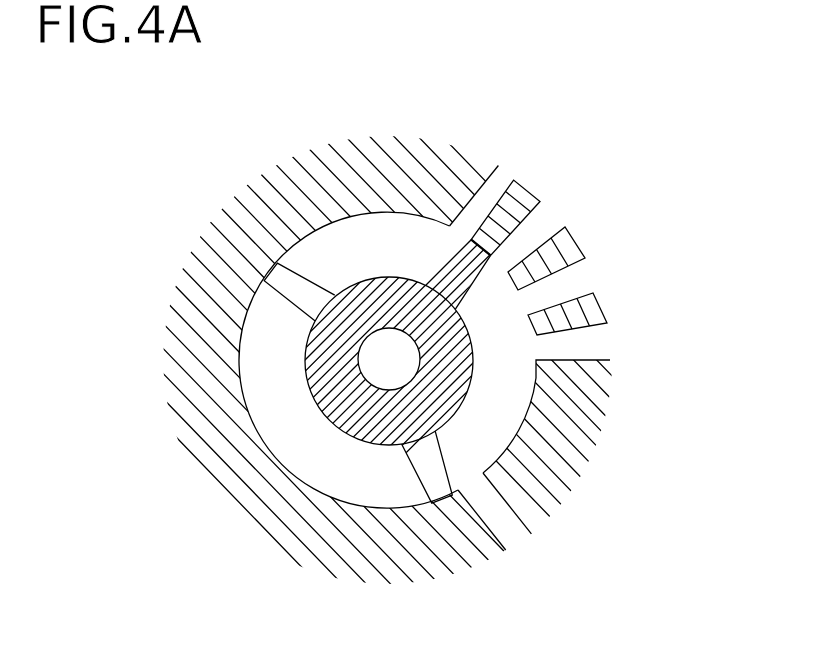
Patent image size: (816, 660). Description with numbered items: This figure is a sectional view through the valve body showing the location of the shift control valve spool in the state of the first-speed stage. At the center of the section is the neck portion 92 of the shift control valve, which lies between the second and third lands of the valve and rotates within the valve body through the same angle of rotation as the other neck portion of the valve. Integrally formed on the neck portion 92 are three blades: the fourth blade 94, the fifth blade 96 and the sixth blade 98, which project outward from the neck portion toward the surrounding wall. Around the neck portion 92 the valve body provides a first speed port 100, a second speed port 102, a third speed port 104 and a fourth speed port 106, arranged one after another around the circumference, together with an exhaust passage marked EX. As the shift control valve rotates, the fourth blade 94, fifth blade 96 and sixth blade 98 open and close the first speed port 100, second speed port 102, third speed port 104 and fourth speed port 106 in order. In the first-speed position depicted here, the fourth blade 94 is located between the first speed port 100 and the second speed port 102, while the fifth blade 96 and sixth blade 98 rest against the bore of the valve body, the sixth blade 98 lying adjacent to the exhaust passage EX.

The neck portion 92 is at (303, 356).
The fourth blade 94 is at (512, 198).
The fifth blade 96 is at (290, 282).
The sixth blade 98 is at (433, 480).
The first speed port 100 is at (484, 192).
The second speed port 102 is at (530, 233).
The third speed port 104 is at (563, 287).
The fourth speed port 106 is at (577, 343).
The exhaust port EX is at (505, 529).